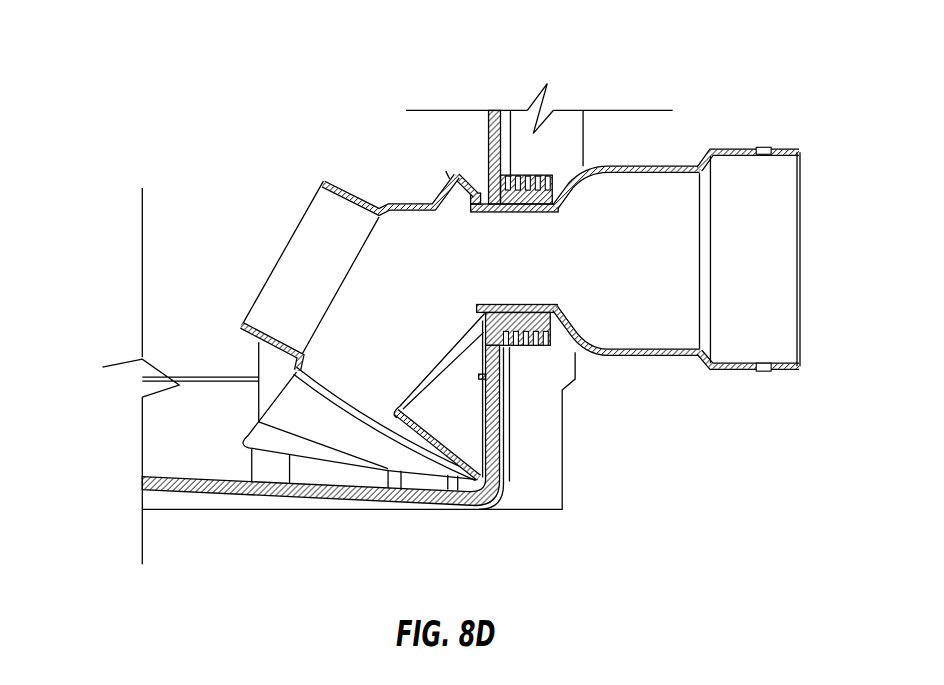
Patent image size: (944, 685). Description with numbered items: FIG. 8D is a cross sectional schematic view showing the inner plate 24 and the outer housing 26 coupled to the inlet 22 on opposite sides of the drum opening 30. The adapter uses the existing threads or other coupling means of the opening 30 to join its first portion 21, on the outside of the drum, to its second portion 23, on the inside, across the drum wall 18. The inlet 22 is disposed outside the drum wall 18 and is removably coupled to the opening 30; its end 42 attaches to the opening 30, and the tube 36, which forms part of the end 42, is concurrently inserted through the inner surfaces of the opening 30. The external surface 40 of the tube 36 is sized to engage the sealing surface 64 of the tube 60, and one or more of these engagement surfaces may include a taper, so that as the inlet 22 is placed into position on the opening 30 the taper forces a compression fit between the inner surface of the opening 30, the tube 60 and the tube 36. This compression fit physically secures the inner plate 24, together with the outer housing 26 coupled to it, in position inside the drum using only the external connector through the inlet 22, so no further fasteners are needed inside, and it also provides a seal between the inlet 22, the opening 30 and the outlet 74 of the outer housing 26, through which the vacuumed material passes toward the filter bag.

The drum wall 18 is at (494, 107).
The first portion 21 is at (232, 424).
The inlet 22 is at (682, 352).
The second portion 23 is at (629, 382).
The inner plate 24 is at (405, 384).
The outer housing 26 is at (399, 199).
The drum opening 30 is at (543, 188).
The tube 36 is at (541, 211).
The external surface 40 is at (540, 206).
The end 42 is at (513, 347).
The tube 60 is at (503, 203).
The sealing surface 64 is at (497, 210).
The outlet 74 is at (252, 318).